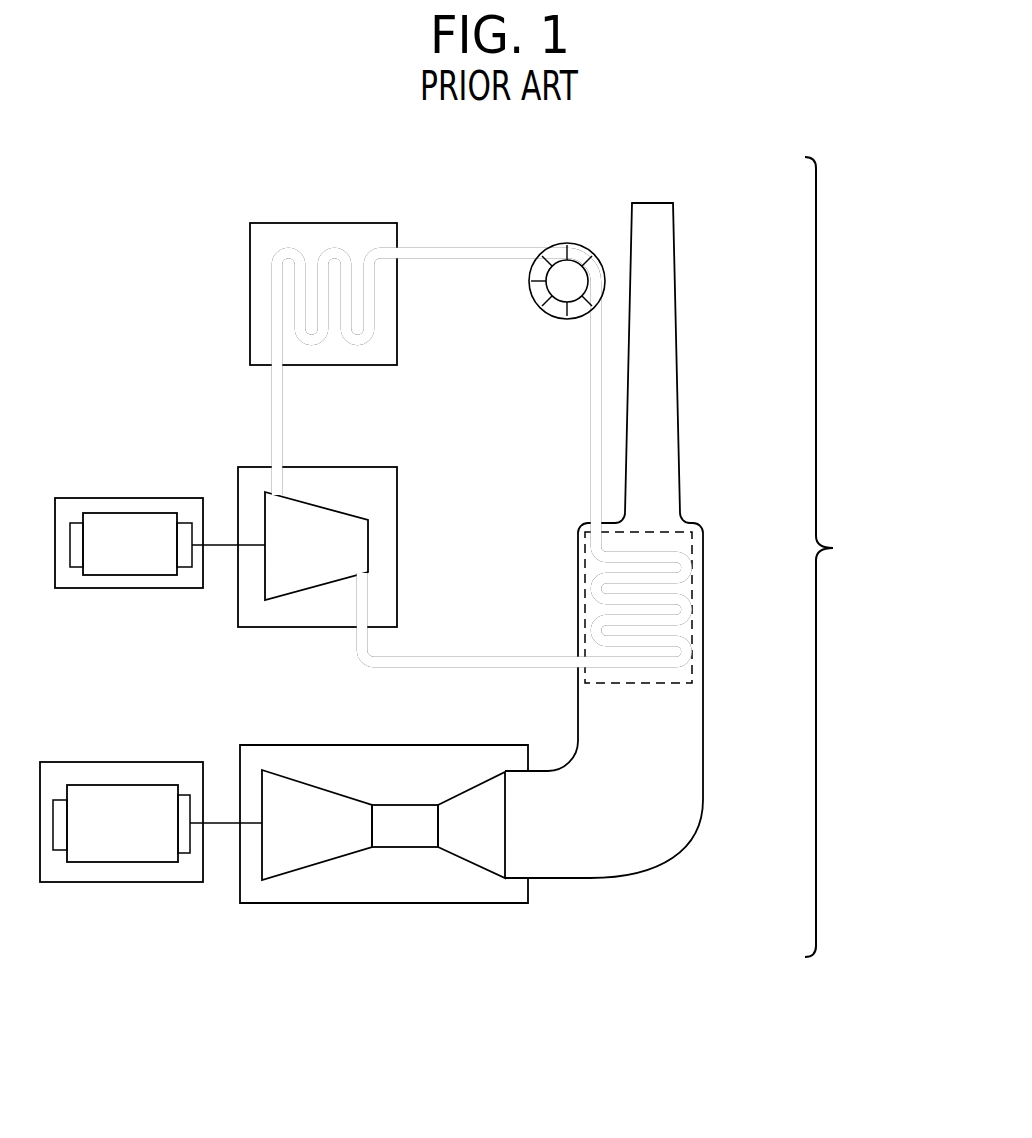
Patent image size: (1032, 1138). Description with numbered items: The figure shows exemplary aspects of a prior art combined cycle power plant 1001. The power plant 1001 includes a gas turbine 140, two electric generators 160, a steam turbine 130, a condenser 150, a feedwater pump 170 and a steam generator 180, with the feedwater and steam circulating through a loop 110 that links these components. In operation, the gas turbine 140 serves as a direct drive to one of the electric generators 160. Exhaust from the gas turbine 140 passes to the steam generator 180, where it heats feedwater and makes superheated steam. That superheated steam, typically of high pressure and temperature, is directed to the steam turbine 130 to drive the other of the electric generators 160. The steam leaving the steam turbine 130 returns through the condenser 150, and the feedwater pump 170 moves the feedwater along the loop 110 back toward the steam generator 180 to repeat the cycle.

The loop 110 is at (493, 256).
The steam turbine 130 is at (387, 490).
The gas turbine 140 is at (393, 885).
The condenser 150 is at (264, 232).
The electric generators 160 is at (168, 591).
The feedwater pump 170 is at (568, 287).
The steam generator 180 is at (687, 652).
The combined cycle power plant 1001 is at (870, 557).